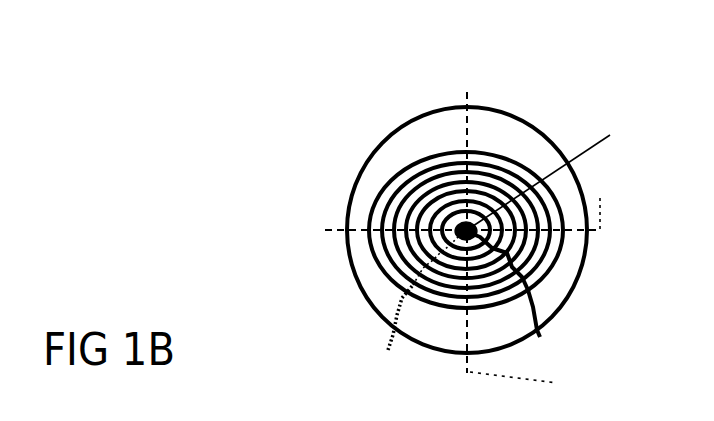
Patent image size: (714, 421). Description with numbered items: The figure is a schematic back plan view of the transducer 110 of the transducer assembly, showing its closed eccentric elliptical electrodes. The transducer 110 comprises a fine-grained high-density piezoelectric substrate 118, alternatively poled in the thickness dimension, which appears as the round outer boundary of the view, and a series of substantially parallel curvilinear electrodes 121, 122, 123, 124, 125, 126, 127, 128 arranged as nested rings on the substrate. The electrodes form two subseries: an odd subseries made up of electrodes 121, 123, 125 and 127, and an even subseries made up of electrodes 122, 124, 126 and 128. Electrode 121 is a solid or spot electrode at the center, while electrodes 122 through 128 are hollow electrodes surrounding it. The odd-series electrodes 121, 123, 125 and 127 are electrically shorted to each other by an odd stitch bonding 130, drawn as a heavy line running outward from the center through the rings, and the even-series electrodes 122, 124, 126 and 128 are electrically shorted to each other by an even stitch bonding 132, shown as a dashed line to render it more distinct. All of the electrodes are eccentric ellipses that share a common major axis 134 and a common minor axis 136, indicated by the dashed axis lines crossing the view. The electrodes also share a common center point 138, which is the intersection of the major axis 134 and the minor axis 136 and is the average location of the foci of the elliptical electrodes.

The transducer 110 is at (425, 94).
The fine-grained high-density piezoelectric substrate 118 is at (507, 125).
The electrode 121 is at (462, 220).
The electrode 122 is at (444, 242).
The electrode 123 is at (449, 196).
The electrode 124 is at (428, 256).
The electrode 125 is at (436, 198).
The electrode 126 is at (414, 271).
The electrode 127 is at (411, 200).
The electrode 128 is at (403, 290).
The odd stitch bonding 130 is at (540, 337).
The even stitch bonding 132 is at (395, 350).
The common major axis 134 is at (600, 198).
The common minor axis 136 is at (535, 381).
The common center point 138 is at (610, 135).